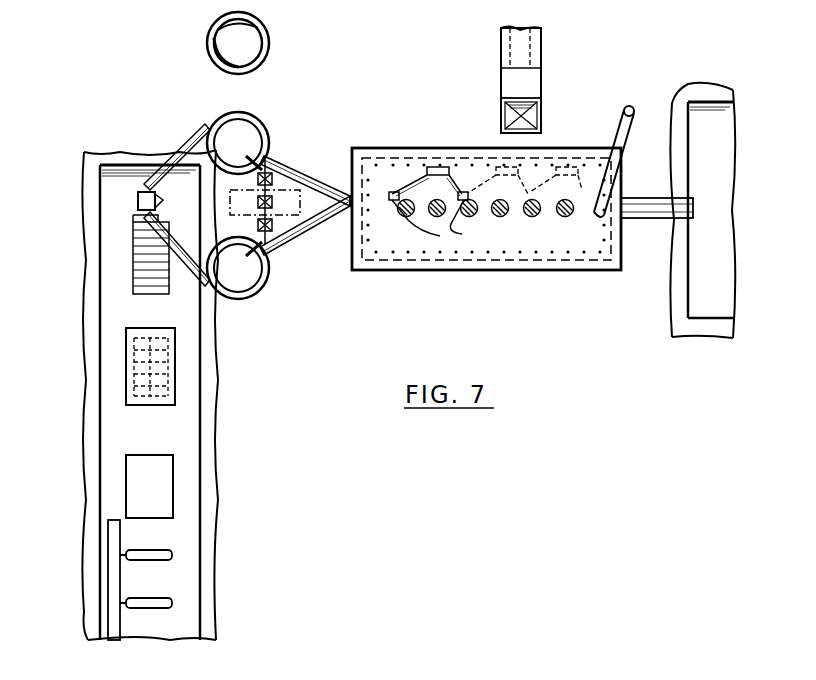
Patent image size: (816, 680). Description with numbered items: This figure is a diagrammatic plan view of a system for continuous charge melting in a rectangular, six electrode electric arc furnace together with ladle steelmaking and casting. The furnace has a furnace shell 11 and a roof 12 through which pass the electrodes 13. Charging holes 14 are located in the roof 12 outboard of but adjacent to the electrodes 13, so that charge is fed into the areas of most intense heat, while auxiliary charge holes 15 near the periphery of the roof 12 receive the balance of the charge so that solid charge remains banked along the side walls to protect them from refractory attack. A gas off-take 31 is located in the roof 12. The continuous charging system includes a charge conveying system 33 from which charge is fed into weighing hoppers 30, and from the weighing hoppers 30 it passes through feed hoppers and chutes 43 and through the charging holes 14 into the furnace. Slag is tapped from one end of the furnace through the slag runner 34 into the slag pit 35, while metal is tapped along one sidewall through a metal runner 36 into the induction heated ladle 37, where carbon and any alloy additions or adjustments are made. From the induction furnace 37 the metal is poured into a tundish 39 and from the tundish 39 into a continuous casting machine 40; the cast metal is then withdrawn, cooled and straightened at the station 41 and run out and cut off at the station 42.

The furnace shell 11 is at (505, 271).
The roof 12 is at (392, 234).
The electrodes 13 is at (505, 215).
The charging holes 14 is at (410, 217).
The auxiliary charge holes 15 is at (407, 163).
The weighing hoppers 30 is at (480, 178).
The gas off-take 31 is at (622, 136).
The charge conveying system 33 is at (541, 73).
The slag runner 34 is at (650, 219).
The slag pit 35 is at (706, 279).
The metal runner 36 is at (300, 170).
The induction furnace or ladle 37 is at (222, 205).
The tundish 39 is at (138, 200).
The continuous casting machine 40 is at (133, 225).
The withdrawal, cooling and straightening station 41 is at (126, 360).
The run-out and cut-off station 42 is at (130, 482).
The feed hoppers and chutes 43 is at (389, 194).